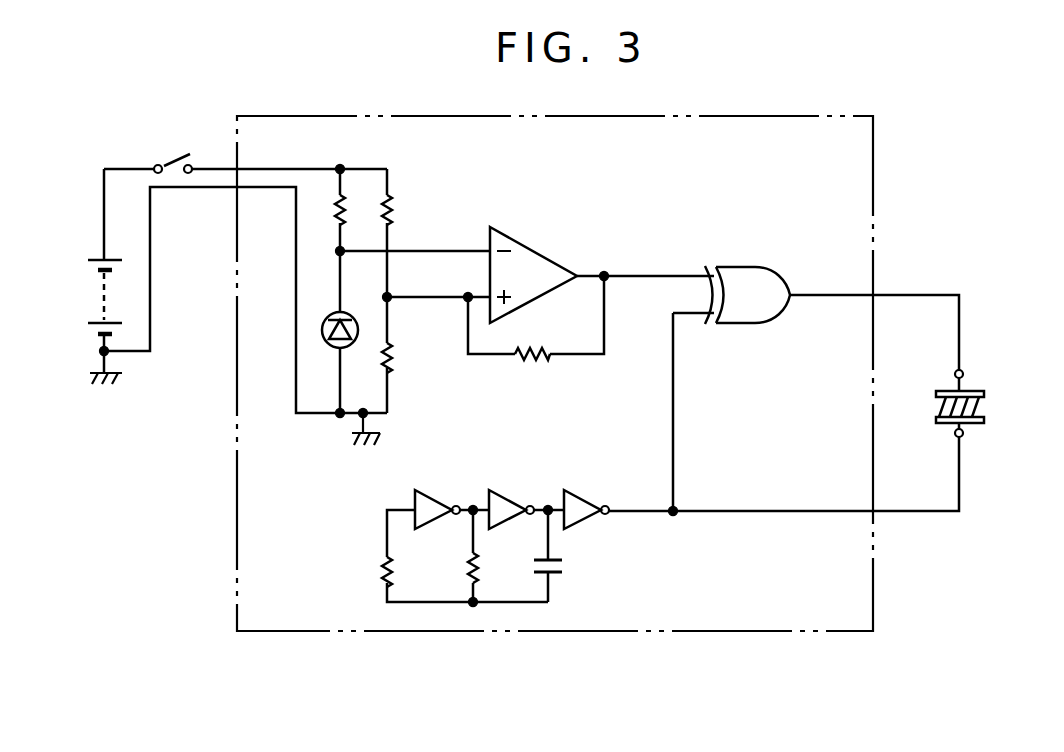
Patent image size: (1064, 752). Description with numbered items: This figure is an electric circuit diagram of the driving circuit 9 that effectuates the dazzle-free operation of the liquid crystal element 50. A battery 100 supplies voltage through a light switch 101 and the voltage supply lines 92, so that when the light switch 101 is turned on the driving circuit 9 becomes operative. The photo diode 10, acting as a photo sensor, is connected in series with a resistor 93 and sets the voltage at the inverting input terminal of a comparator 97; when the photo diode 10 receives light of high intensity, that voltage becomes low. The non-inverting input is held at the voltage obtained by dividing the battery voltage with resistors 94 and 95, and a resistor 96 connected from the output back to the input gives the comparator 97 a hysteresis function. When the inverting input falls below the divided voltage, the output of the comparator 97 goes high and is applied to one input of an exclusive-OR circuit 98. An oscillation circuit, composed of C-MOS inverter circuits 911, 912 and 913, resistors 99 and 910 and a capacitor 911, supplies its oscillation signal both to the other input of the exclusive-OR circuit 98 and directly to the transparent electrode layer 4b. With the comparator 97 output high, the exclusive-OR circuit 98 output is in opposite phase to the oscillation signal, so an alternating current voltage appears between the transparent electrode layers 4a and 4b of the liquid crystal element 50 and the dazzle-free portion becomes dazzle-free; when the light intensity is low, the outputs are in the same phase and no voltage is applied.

The driving circuit 9 is at (428, 116).
The photo diode 10 is at (333, 348).
The transparent electrode layer 4a is at (970, 390).
The transparent electrode layer 4b is at (975, 423).
The liquid crystal element 50 is at (997, 404).
The voltage supply lines 92 is at (217, 165).
The resistor 93 is at (348, 207).
The resistor 94 is at (395, 210).
The resistor 95 is at (395, 358).
The resistor 96 is at (530, 362).
The comparator 97 is at (545, 256).
The exclusive-OR circuit 98 is at (752, 265).
The resistor 99 is at (381, 577).
The battery 100 is at (100, 299).
The light switch 101 is at (177, 158).
The resistor 910 is at (471, 575).
The C-MOS inverter circuit 911 is at (432, 490).
The C-MOS inverter circuit 912 is at (512, 490).
The C-MOS inverter circuit 913 is at (589, 490).